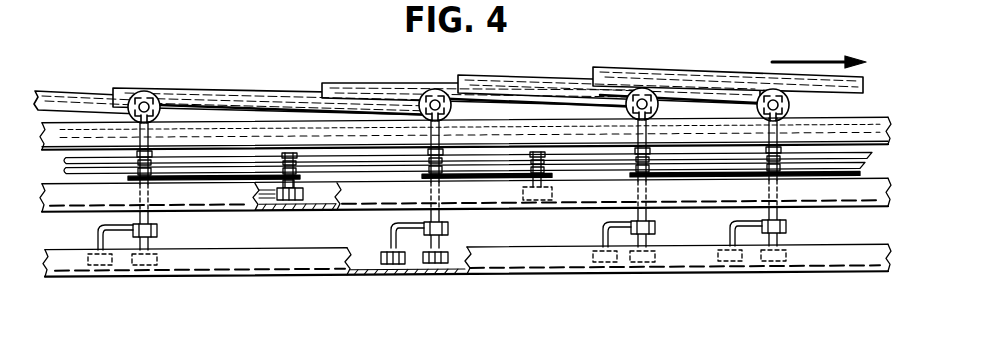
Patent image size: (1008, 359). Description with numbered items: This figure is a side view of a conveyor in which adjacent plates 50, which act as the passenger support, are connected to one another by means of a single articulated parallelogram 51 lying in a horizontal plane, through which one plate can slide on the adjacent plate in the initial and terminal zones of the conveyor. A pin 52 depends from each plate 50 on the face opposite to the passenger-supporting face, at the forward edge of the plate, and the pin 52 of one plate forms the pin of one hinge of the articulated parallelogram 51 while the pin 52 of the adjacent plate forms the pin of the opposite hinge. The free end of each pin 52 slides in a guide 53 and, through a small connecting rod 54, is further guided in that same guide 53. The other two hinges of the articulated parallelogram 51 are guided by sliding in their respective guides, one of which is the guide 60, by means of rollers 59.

The plate 50 is at (373, 85).
The articulated parallelogram 51 is at (210, 180).
The pin 52 is at (150, 244).
The guide 53 is at (541, 262).
The connecting rod 54 is at (98, 238).
The roller 59 is at (288, 201).
The guide 60 is at (366, 196).